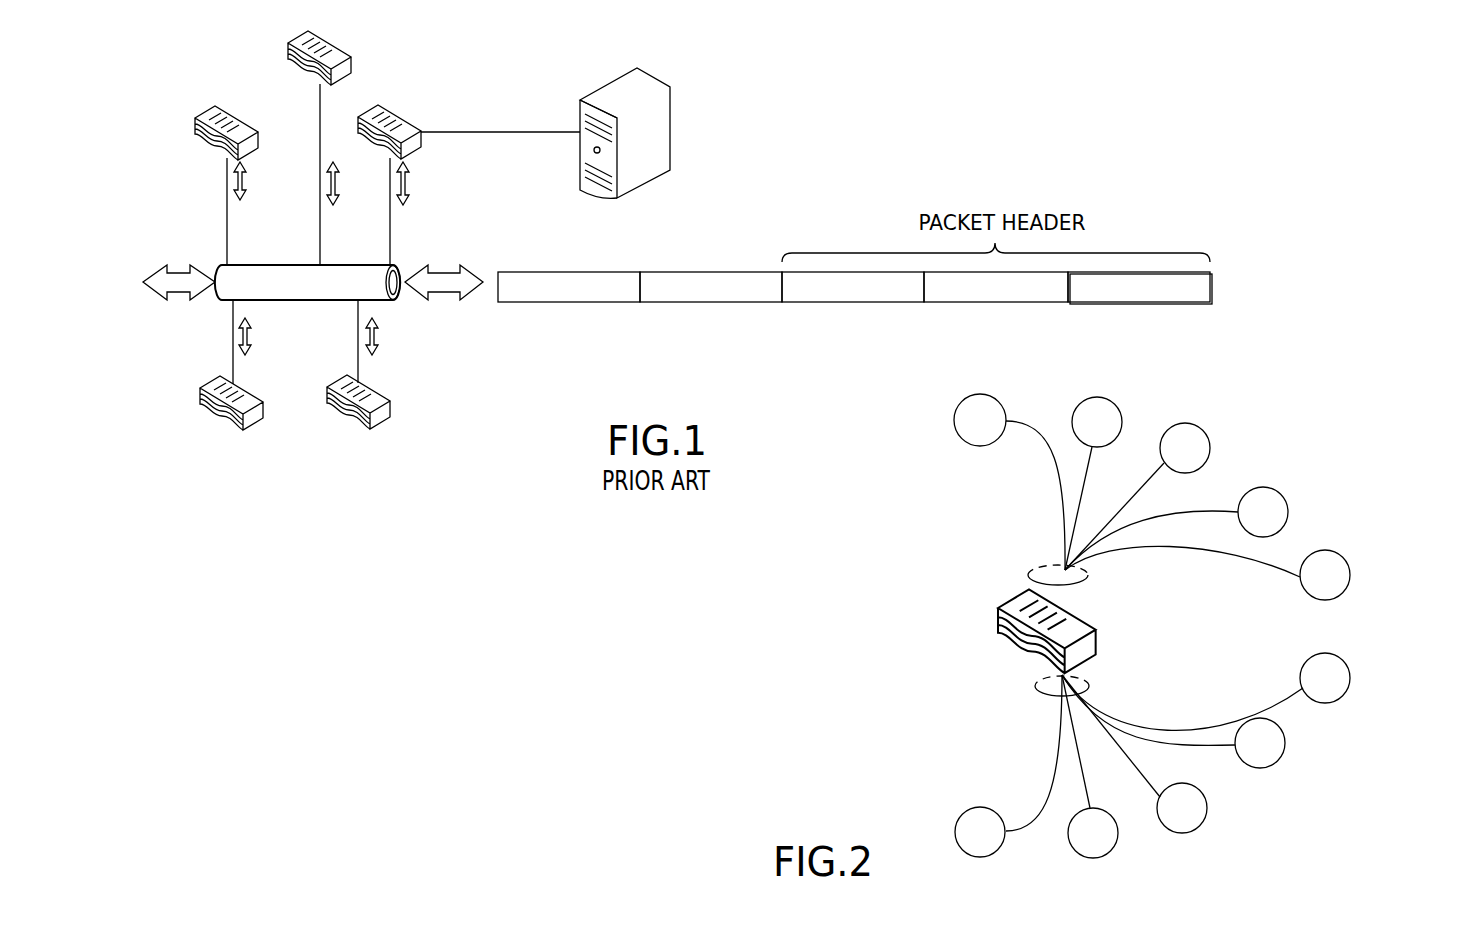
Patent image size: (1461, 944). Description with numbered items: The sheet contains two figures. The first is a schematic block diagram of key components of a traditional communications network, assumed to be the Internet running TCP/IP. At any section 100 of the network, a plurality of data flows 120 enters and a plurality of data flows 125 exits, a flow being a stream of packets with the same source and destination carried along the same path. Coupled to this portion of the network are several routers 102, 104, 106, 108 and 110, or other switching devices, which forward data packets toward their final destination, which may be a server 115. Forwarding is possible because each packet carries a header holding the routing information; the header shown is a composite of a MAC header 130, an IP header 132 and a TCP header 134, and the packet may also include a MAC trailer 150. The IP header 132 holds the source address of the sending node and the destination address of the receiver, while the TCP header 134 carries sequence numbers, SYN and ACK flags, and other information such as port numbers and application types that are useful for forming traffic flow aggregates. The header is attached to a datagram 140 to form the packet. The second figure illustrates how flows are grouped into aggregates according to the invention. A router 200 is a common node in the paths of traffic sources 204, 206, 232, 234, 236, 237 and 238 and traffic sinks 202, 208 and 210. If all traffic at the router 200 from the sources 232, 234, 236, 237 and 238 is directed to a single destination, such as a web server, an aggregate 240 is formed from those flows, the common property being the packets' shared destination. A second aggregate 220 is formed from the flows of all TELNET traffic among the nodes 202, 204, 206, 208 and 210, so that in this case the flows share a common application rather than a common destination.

In FIG. 1, the section of the network 100 is at (320, 300).
In FIG. 1, the router 102 is at (238, 118).
In FIG. 1, the router 104 is at (353, 60).
In FIG. 1, the router 106 is at (423, 140).
In FIG. 1, the router 108 is at (390, 403).
In FIG. 1, the router 110 is at (265, 403).
In FIG. 1, the server 115 is at (670, 119).
In FIG. 1, the data flows 120 is at (187, 265).
In FIG. 1, the data flows 125 is at (445, 262).
In FIG. 1, the MAC header 130 is at (1137, 302).
In FIG. 1, the IP header 132 is at (978, 302).
In FIG. 1, the TCP header 134 is at (852, 302).
In FIG. 1, the datagram 140 is at (687, 302).
In FIG. 1, the MAC trailer 150 is at (547, 302).
In FIG. 2, the router 200 is at (1098, 638).
In FIG. 2, the traffic sink 202 is at (956, 428).
In FIG. 2, the traffic source 204 is at (1117, 405).
In FIG. 2, the traffic source 206 is at (1208, 437).
In FIG. 2, the traffic sink 208 is at (1288, 505).
In FIG. 2, the traffic sink 210 is at (1350, 573).
In FIG. 2, the second aggregate 220 is at (1030, 570).
In FIG. 2, the traffic source 232 is at (1350, 663).
In FIG. 2, the traffic source 234 is at (1285, 752).
In FIG. 2, the traffic source 236 is at (1208, 815).
In FIG. 2, the traffic source 237 is at (1115, 850).
In FIG. 2, the traffic source 238 is at (958, 812).
In FIG. 2, the aggregate 240 is at (1035, 686).